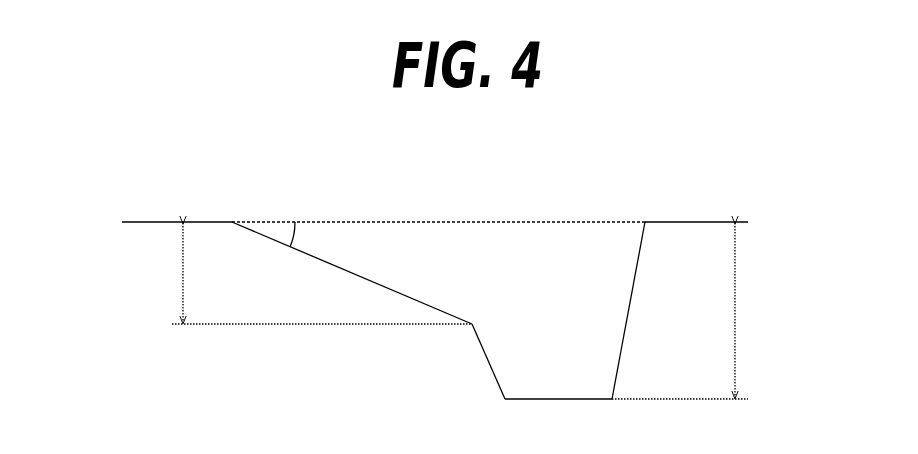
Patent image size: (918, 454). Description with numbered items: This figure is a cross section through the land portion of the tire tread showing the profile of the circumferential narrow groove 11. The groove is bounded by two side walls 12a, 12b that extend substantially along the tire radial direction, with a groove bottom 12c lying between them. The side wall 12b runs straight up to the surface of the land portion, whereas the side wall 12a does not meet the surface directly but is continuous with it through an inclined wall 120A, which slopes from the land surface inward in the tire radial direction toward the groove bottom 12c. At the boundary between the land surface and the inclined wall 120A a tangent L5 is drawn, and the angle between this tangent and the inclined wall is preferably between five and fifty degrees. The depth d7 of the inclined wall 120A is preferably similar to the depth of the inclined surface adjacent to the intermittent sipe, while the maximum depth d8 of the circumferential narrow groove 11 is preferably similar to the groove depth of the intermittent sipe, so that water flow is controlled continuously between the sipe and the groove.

The circumferential narrow groove 11 is at (545, 212).
The tangent L5 is at (367, 222).
The inclined wall 120A is at (373, 283).
The side wall 12a is at (490, 362).
The side wall 12b is at (625, 322).
The groove bottom 12c is at (558, 399).
The depth of the inclined wall d7 is at (314, 273).
The maximum depth of the circumferential narrow groove d8 is at (689, 311).